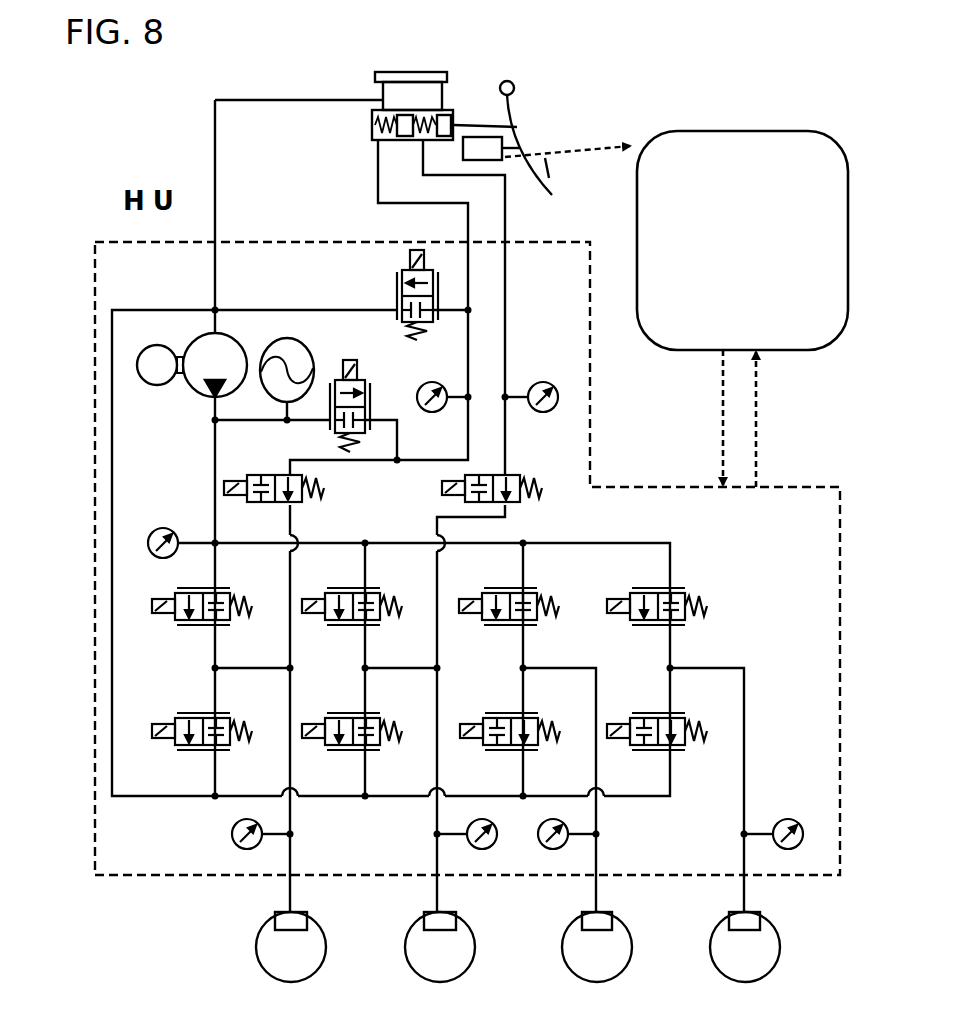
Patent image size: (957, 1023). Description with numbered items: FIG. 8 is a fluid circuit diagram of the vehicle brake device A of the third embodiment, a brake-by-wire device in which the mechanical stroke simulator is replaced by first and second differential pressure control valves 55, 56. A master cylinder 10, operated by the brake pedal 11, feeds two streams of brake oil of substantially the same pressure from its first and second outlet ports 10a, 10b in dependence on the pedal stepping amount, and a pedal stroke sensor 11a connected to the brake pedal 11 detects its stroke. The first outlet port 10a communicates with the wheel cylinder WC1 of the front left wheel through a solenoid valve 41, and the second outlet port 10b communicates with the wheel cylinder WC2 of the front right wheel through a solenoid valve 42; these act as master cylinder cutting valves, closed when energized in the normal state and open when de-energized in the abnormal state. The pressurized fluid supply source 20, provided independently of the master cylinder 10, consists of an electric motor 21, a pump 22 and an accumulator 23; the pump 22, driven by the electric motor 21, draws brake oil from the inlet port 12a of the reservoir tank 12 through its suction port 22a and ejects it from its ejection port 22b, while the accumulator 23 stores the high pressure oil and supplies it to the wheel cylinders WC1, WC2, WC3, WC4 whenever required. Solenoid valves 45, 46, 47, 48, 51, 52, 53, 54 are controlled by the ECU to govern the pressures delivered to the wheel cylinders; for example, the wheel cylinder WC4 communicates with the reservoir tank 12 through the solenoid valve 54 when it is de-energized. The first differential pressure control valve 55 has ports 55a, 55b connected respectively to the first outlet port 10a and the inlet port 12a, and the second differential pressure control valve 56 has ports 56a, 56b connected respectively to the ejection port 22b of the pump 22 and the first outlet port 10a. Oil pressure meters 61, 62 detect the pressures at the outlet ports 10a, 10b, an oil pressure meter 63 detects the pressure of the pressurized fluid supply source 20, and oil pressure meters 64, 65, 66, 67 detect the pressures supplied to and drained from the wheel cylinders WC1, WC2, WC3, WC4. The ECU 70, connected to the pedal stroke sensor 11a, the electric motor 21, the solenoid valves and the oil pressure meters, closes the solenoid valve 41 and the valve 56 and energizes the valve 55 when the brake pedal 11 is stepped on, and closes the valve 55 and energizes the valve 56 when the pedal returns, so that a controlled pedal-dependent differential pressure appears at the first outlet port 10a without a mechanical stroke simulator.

The master cylinder 10 is at (372, 122).
The first outlet port 10a is at (378, 143).
The second outlet port 10b is at (423, 143).
The brake pedal 11 is at (517, 130).
The pedal stroke sensor 11a is at (483, 158).
The reservoir tank 12 is at (408, 75).
The inlet port 12a is at (380, 100).
The pressurized fluid supply source 20 is at (172, 403).
The electric motor 21 is at (137, 367).
The pump 22 is at (228, 338).
The suction port 22a is at (213, 333).
The ejection port 22b is at (214, 400).
The accumulator 23 is at (303, 352).
The solenoid valve 41 is at (283, 475).
The solenoid valve 42 is at (516, 475).
The solenoid valve 45 is at (225, 590).
The solenoid valve 46 is at (190, 715).
The solenoid valve 47 is at (375, 590).
The solenoid valve 48 is at (340, 715).
The solenoid valve 51 is at (535, 590).
The solenoid valve 52 is at (495, 715).
The solenoid valve 53 is at (685, 590).
The solenoid valve 54 is at (650, 715).
The first differential pressure control valve 55 is at (397, 278).
The port 55a is at (440, 303).
The port 55b is at (397, 305).
The second differential pressure control valve 56 is at (371, 396).
The port 56a is at (330, 425).
The port 56b is at (371, 433).
The oil pressure meter 61 is at (435, 381).
The oil pressure meter 62 is at (543, 381).
The oil pressure meter 63 is at (165, 528).
The oil pressure meter 64 is at (232, 832).
The oil pressure meter 65 is at (490, 823).
The oil pressure meter 66 is at (548, 848).
The oil pressure meter 67 is at (790, 820).
The ECU 70 is at (792, 133).
The vehicle brake device A is at (655, 79).
The wheel cylinder WC1 is at (288, 912).
The wheel cylinder WC2 is at (438, 912).
The wheel cylinder WC3 is at (595, 912).
The wheel cylinder WC4 is at (745, 912).